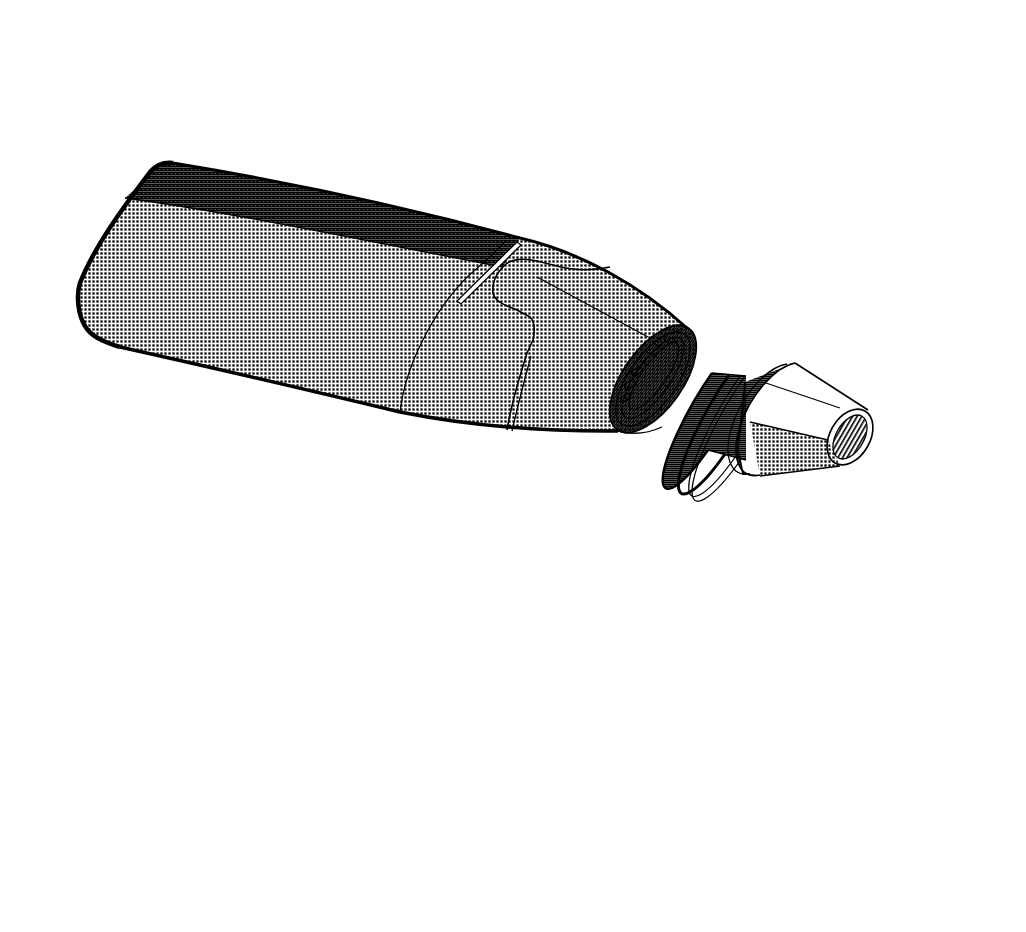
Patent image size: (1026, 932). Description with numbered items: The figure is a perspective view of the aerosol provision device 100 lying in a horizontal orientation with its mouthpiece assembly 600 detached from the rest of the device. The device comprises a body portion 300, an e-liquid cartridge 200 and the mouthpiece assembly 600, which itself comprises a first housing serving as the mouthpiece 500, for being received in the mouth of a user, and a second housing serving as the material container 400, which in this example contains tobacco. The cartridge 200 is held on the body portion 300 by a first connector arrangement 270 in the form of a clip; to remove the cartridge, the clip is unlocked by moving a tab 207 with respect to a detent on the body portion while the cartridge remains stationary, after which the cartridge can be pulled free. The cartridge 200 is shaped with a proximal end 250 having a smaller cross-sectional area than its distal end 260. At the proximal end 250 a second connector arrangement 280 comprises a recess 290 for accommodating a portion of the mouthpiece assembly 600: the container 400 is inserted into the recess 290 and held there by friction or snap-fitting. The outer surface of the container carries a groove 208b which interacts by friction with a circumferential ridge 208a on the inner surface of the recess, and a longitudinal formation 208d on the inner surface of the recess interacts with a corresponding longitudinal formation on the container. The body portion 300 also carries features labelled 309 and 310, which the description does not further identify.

The aerosol provision device 100 is at (393, 93).
The cartridge 200 is at (643, 285).
The tab 207 is at (525, 280).
The circumferential ridge 208a is at (641, 422).
The groove 208b is at (722, 408).
The longitudinal formation 208d is at (637, 371).
The proximal end 250 is at (681, 327).
The distal end 260 is at (523, 355).
The first connector arrangement 270 is at (550, 258).
The second connector arrangement 280 is at (663, 440).
The recess 290 is at (627, 404).
The body portion 300 is at (258, 386).
The seam line 309 is at (257, 238).
The housing section 310 is at (257, 173).
The material container 400 is at (723, 385).
The mouthpiece 500 is at (812, 383).
The mouthpiece assembly 600 is at (778, 488).